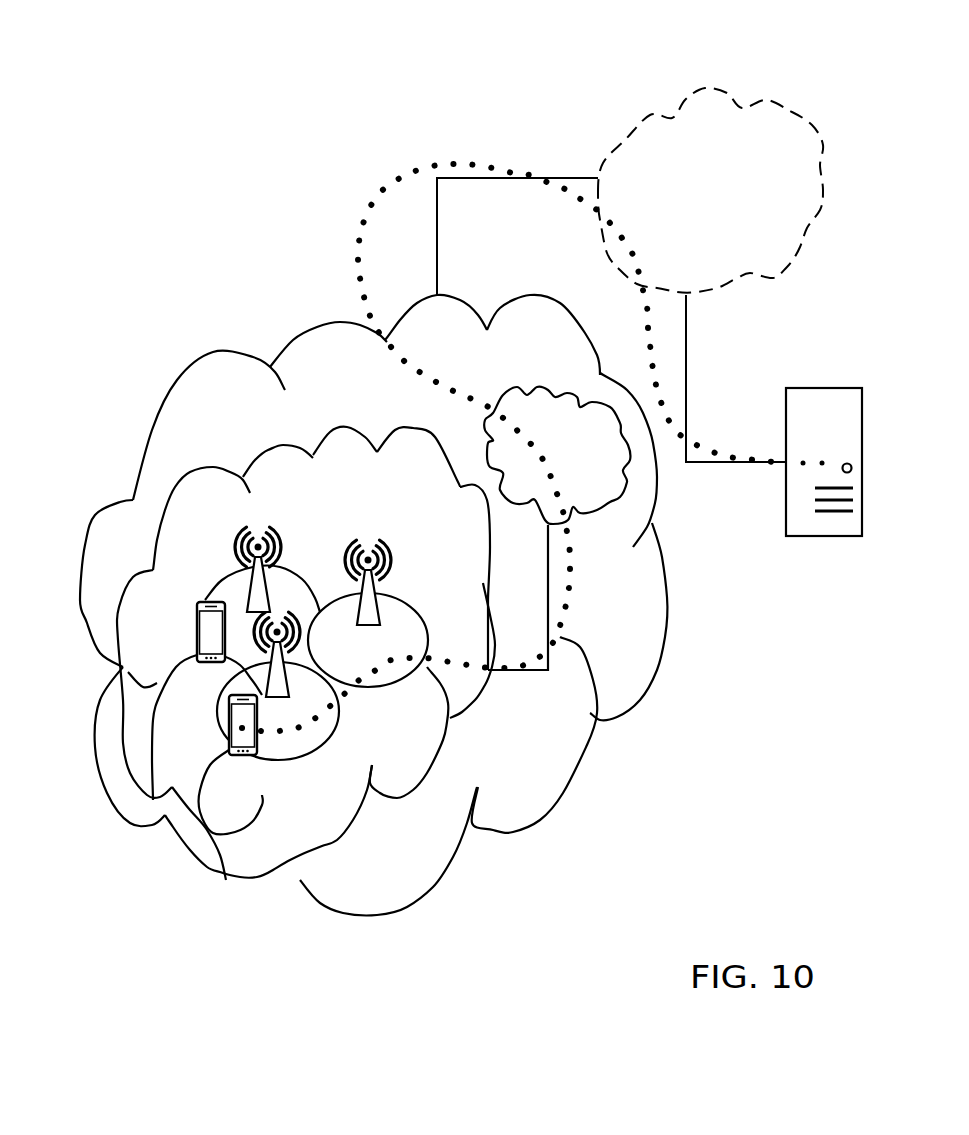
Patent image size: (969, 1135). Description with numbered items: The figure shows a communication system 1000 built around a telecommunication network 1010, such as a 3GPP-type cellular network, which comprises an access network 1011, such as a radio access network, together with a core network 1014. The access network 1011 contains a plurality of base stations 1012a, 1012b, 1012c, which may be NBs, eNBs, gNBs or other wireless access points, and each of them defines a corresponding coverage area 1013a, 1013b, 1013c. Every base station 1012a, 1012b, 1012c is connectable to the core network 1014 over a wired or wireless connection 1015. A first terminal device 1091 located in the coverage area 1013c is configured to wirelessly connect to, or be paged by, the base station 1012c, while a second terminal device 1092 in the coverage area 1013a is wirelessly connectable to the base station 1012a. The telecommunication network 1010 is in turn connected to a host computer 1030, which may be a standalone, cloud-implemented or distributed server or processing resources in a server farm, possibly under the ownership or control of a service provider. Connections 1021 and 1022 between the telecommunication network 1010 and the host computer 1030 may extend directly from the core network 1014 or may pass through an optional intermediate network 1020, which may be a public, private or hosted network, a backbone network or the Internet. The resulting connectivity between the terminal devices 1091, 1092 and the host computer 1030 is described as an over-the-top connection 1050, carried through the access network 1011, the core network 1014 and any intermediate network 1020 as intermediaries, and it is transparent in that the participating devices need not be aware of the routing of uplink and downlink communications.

The communication system 1000 is at (203, 75).
The telecommunication network 1010 is at (373, 605).
The access network 1011 is at (303, 612).
The base station 1012a is at (290, 695).
The base station 1012b is at (387, 562).
The base station 1012c is at (238, 550).
The coverage area 1013a is at (340, 710).
The coverage area 1013b is at (427, 640).
The coverage area 1013c is at (213, 597).
The core network 1014 is at (557, 455).
The wired or wireless connection 1015 is at (550, 573).
The intermediate network 1020 is at (710, 190).
The connection 1021 is at (517, 178).
The connection 1022 is at (740, 463).
The host computer 1030 is at (849, 440).
The OTT connection 1050 is at (417, 208).
The first terminal device 1091 is at (153, 800).
The second terminal device 1092 is at (226, 880).